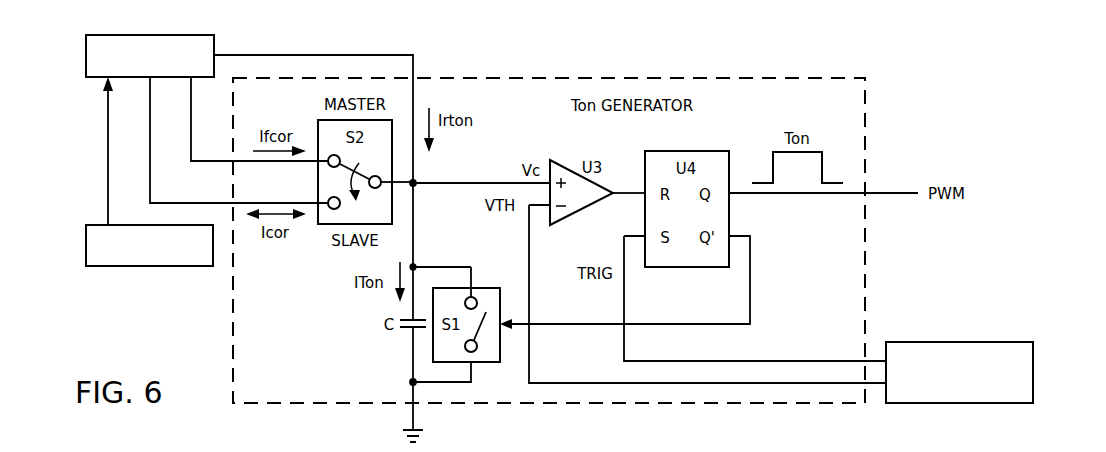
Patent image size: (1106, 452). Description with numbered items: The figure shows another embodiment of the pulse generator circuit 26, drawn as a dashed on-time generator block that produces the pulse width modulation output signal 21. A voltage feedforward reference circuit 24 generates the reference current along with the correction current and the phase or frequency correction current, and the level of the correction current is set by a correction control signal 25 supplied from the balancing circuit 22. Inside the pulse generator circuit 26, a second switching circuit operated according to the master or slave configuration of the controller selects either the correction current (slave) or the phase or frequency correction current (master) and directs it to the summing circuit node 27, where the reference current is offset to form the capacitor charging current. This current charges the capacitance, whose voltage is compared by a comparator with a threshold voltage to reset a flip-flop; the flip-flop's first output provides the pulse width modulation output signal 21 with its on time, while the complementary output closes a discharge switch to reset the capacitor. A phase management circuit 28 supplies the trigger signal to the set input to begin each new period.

The PWM output signal 21 is at (882, 195).
The balancing circuit 22 is at (148, 267).
The reference circuit 24 is at (86, 44).
The correction control signal 25 is at (108, 192).
The pulse generator circuit 26 is at (798, 75).
The summing circuit node 27 is at (418, 264).
The phase management circuit 28 is at (1033, 392).